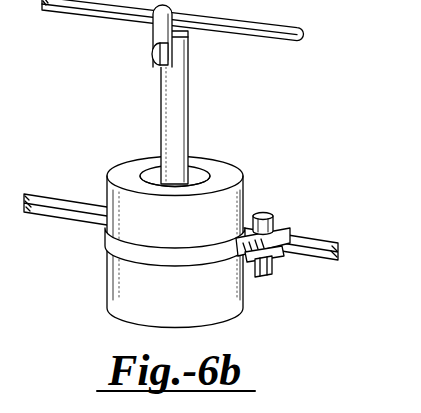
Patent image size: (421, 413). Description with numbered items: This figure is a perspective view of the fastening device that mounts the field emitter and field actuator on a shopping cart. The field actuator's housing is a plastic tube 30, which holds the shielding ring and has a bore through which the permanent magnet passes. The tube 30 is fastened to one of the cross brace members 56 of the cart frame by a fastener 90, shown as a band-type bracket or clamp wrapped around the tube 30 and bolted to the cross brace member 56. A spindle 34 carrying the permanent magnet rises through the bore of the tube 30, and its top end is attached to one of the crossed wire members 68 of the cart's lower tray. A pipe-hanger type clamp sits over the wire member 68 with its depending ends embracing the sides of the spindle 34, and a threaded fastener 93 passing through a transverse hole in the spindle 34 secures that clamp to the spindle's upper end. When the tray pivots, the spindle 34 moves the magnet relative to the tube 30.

The plastic tube 30 is at (241, 318).
The spindle 34 is at (160, 111).
The cross brace member 56 is at (316, 261).
The crossed wire member 68 is at (263, 41).
The fastener 90 is at (128, 265).
The threaded fastener 93 is at (151, 53).